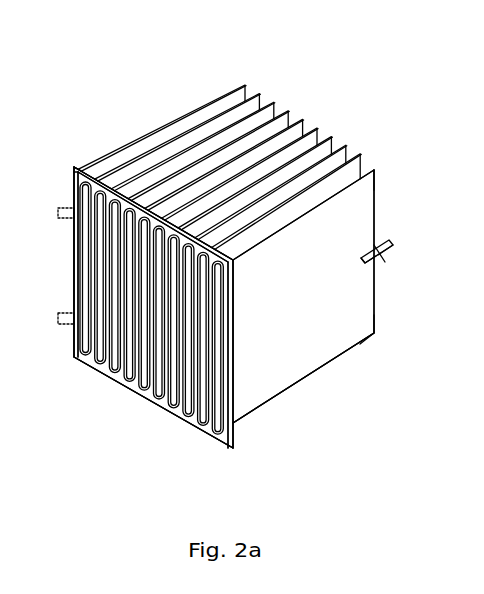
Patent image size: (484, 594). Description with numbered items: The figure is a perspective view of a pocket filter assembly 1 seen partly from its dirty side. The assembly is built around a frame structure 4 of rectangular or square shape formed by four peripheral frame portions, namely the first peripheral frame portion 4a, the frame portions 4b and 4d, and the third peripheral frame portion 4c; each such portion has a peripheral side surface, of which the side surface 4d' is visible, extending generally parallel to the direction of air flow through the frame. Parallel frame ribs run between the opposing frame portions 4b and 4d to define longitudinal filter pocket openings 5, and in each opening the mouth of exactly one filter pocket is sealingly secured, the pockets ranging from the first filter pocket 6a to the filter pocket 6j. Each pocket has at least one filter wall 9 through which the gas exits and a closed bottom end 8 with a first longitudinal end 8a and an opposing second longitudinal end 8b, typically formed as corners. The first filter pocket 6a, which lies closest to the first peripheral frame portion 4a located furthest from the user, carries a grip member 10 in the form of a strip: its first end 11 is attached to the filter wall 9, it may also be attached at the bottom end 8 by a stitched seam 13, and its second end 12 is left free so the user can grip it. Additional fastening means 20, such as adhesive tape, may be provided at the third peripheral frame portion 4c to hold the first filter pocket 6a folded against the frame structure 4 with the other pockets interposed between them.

The pocket filter assembly 1 is at (86, 32).
The frame structure 4 is at (151, 396).
The first peripheral frame portion 4a is at (233, 338).
The peripheral frame portion 4b is at (188, 423).
The third peripheral frame portion 4c is at (77, 270).
The peripheral frame portion 4d is at (130, 214).
The peripheral side surface 4d' is at (89, 143).
The filter pocket openings 5 is at (88, 341).
The additional fastening means 20 is at (59, 212).
The filter pocket 6j is at (235, 101).
The first filter pocket 6a is at (360, 190).
The closed bottom end 8 is at (377, 205).
The first longitudinal end 8a is at (374, 168).
The second longitudinal end 8b is at (376, 333).
The filter wall 9 is at (323, 305).
The grip member 10 is at (383, 260).
The first end 11 is at (366, 263).
The second end 12 is at (392, 245).
The stitched seam 13 is at (366, 254).